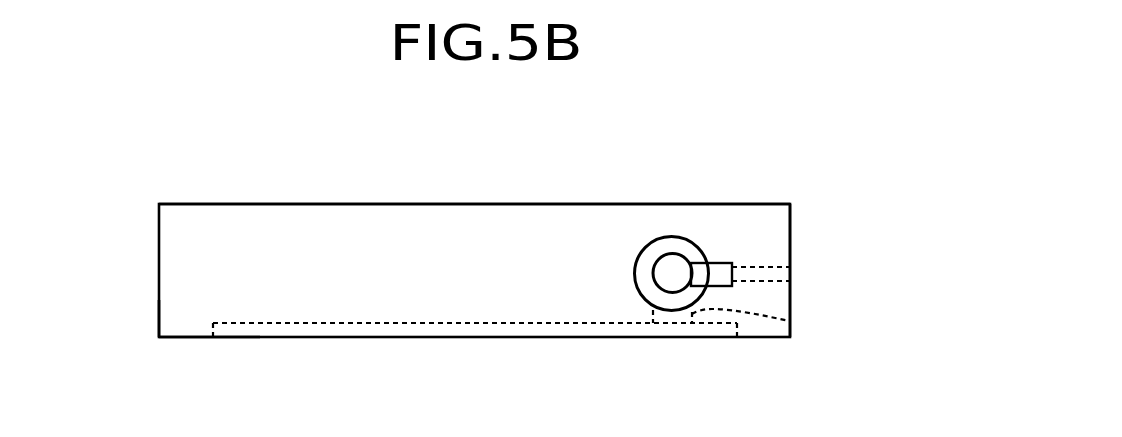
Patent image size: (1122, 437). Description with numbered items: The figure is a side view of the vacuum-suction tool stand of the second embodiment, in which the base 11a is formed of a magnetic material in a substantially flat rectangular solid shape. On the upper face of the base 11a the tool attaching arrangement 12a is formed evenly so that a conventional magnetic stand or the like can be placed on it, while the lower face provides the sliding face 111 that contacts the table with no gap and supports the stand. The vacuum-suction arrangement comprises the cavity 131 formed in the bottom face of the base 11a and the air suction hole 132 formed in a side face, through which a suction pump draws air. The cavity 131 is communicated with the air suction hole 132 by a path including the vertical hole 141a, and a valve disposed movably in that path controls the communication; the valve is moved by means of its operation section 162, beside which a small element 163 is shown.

The base 11a is at (348, 219).
The tool attaching arrangement 12a is at (471, 204).
The sliding face 111 is at (192, 328).
The cavity 131 is at (548, 324).
The air suction hole 132 is at (790, 276).
The vertical hole 141a is at (790, 321).
The operation section 162 is at (670, 268).
The engaging projection 163 is at (722, 274).